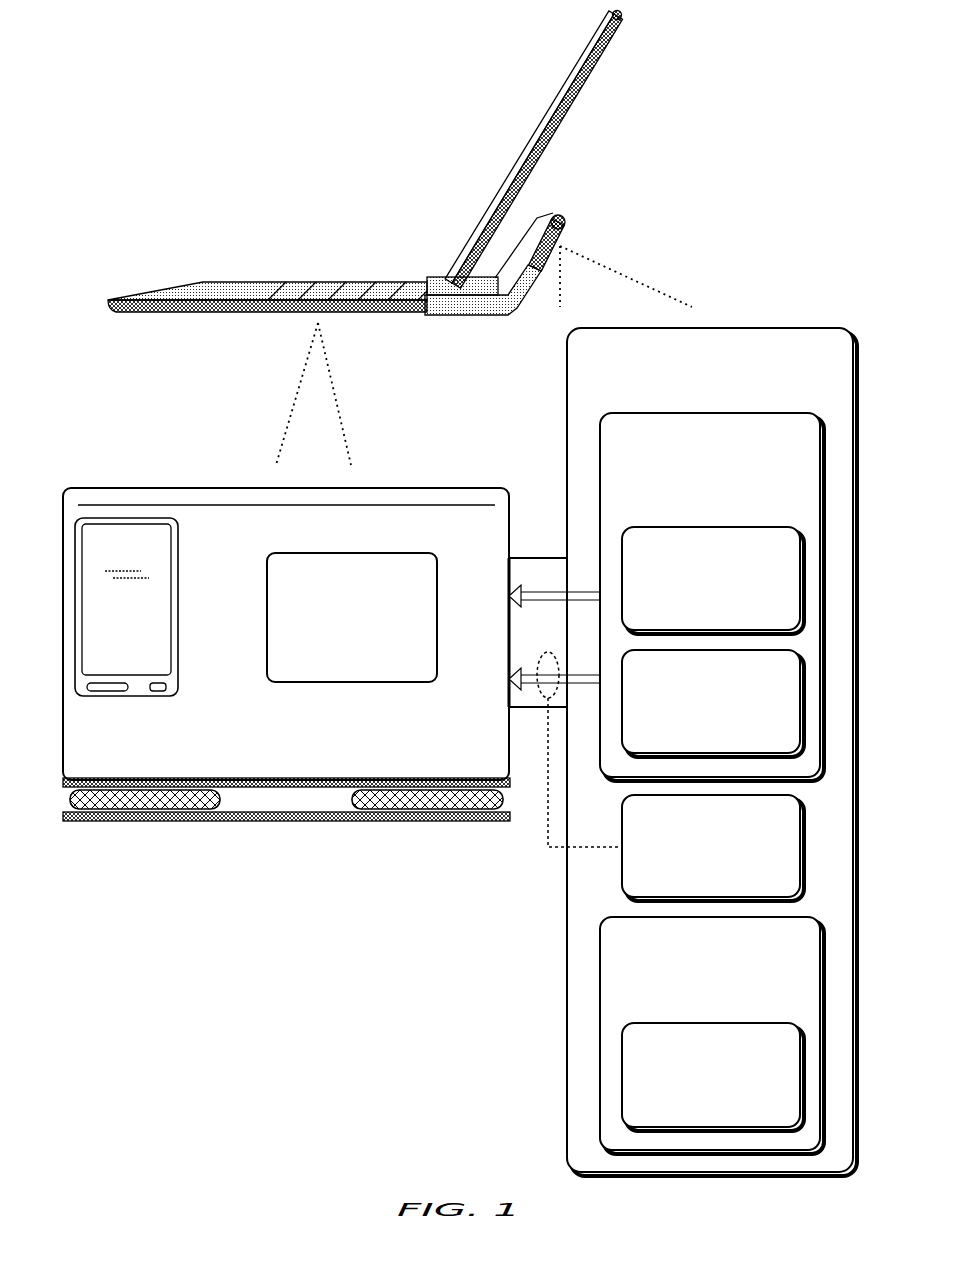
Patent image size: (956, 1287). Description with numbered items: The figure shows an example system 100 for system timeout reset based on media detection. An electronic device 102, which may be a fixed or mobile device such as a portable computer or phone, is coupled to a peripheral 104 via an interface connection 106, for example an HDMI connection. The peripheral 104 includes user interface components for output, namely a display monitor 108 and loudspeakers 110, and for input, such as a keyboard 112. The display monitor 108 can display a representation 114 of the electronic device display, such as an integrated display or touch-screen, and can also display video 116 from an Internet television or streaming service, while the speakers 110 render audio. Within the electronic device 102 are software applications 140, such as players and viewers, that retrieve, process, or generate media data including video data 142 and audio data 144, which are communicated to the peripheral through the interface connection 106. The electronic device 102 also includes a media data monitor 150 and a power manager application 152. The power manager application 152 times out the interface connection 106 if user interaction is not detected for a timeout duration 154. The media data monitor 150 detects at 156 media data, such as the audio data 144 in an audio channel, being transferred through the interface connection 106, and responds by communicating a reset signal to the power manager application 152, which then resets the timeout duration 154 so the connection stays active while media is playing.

The system 100 is at (238, 80).
The electronic device 102 is at (553, 224).
The peripheral 104 is at (388, 170).
The interface connection 106 is at (500, 300).
The display monitor 108 is at (520, 148).
The loudspeakers 110 is at (445, 277).
The keyboard 112 is at (327, 282).
The representation 114 is at (123, 530).
The video 116 is at (352, 617).
The software applications 140 is at (712, 597).
The video data 142 is at (713, 580).
The audio data 144 is at (713, 703).
The media data monitor 150 is at (713, 848).
The power manager application 152 is at (712, 1035).
The timeout duration 154 is at (713, 1077).
The media data detection 156 is at (550, 850).